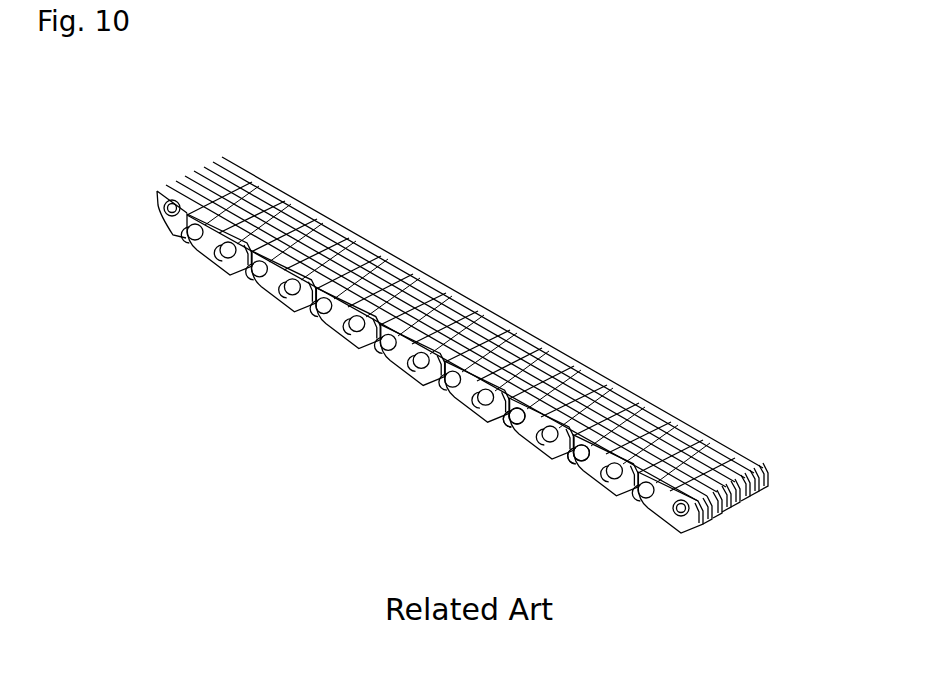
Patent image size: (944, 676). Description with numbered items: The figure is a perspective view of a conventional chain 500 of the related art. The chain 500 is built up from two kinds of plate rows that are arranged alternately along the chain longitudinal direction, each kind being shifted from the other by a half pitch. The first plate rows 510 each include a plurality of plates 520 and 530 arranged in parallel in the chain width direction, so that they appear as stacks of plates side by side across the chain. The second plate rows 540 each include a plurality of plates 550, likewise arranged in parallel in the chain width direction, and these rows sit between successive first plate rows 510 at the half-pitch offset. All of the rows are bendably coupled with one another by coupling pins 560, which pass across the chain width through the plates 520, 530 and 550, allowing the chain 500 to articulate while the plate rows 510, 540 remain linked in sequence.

The chain 500 is at (683, 175).
The first plate row 510 is at (351, 212).
The plate 520 is at (687, 538).
The plate 530 is at (723, 505).
The second plate row 540 is at (183, 96).
The plate 550 is at (215, 163).
The coupling pin 560 is at (510, 423).